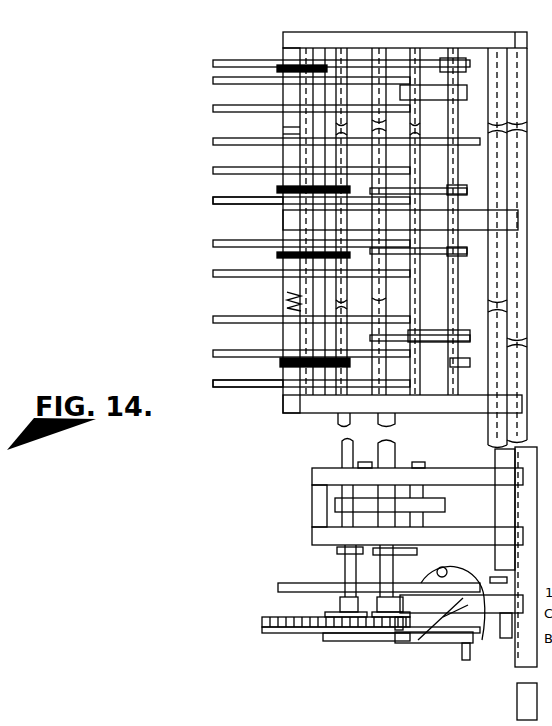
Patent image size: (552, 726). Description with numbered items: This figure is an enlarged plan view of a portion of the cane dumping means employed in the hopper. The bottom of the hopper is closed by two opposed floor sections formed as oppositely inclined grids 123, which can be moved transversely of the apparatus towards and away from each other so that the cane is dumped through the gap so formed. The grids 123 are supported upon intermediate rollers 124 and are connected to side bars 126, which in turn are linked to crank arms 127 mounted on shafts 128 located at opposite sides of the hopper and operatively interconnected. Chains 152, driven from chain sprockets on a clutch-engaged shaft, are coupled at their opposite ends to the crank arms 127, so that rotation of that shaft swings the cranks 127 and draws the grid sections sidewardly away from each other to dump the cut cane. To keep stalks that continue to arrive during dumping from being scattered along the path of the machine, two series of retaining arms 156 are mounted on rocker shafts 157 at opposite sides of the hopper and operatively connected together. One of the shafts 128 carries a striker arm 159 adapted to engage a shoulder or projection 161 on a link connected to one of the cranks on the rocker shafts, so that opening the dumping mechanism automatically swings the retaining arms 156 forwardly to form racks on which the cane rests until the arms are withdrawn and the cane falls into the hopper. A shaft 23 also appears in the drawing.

The shaft 23 is at (252, 392).
The oppositely inclined grids 123 is at (242, 188).
The intermediate rollers 124 is at (288, 305).
The side bars 126 is at (419, 178).
The crank arms 127 is at (434, 92).
The shafts 128 is at (393, 454).
The chains 152 is at (280, 615).
The retaining arms 156 is at (276, 69).
The rocker shafts 157 is at (341, 447).
The striker arm 159 is at (423, 583).
The shoulder or projection 161 is at (483, 640).